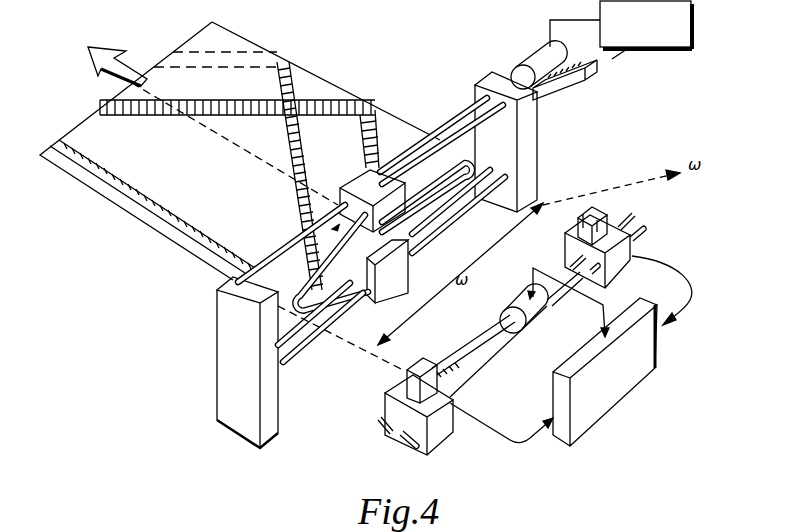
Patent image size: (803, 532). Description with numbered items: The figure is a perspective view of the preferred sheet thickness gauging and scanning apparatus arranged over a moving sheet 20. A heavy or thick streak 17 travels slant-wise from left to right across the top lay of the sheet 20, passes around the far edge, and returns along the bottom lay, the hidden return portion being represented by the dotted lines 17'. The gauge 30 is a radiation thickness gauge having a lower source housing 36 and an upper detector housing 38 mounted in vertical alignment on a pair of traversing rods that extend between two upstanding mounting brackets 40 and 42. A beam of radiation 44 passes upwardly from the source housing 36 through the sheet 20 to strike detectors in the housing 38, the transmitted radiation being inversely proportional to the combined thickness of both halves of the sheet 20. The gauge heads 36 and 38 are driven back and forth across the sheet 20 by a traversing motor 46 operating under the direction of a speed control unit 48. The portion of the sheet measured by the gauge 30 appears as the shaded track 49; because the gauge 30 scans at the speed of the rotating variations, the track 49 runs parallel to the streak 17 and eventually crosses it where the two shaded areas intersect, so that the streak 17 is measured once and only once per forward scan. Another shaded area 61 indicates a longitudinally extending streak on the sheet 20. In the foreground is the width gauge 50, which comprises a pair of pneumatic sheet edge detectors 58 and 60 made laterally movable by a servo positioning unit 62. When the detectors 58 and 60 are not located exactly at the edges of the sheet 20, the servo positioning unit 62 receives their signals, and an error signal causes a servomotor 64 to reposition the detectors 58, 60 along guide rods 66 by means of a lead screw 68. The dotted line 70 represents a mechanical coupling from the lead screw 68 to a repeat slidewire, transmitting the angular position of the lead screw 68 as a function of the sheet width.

The thick streak 17 is at (328, 176).
The dotted-line streak path 17' is at (217, 42).
The sheet 20 is at (170, 237).
The gauge 30 is at (338, 213).
The lower source housing 36 is at (387, 292).
The upper detector housing 38 is at (352, 182).
The mounting bracket 40 is at (217, 355).
The mounting bracket 42 is at (538, 148).
The beam of radiation 44 is at (373, 237).
The traversing motor 46 is at (533, 55).
The speed control unit 48 is at (695, 25).
The track 49 is at (157, 116).
The width gauge 50 is at (647, 255).
The pneumatic sheet edge detector 58 is at (425, 358).
The pneumatic sheet edge detector 60 is at (597, 208).
The shaded area 61 is at (177, 215).
The servo positioning unit 62 is at (660, 355).
The servomotor 64 is at (513, 303).
The guide rods 66 is at (488, 375).
The lead screw 68 is at (472, 343).
The dotted line 70 is at (658, 192).